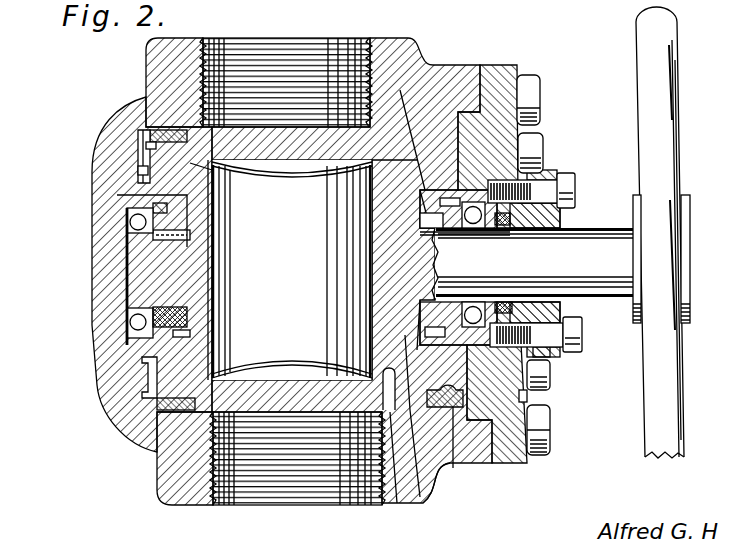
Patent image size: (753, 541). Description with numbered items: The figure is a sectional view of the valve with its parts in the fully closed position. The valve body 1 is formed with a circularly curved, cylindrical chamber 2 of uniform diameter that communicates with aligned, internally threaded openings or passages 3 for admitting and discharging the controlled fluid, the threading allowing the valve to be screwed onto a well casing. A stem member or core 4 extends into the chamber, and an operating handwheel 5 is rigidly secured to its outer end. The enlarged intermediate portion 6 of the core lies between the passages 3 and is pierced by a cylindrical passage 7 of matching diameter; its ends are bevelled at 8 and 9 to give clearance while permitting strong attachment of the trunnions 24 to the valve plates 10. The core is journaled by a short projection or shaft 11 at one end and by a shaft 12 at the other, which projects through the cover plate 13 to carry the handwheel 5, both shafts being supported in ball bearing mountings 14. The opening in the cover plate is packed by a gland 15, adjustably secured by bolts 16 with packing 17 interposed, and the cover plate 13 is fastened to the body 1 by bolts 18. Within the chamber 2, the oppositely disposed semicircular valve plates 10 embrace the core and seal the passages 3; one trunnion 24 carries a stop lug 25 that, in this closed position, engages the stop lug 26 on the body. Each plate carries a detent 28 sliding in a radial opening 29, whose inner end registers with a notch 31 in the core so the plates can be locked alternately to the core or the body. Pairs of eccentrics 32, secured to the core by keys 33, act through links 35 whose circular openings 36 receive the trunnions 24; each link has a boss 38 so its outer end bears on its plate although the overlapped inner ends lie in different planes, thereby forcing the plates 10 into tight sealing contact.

The valve body 1 is at (145, 433).
The chamber 2 is at (157, 452).
The openings or passages 3 is at (290, 48).
The stem member or core 4 is at (150, 250).
The operating handwheel 5 is at (672, 157).
The intermediate portion 6 is at (368, 204).
The passage 7 is at (200, 273).
The coned or bevelled end 8 is at (368, 184).
The coned or bevelled end 9 is at (222, 186).
The valve plates 10 is at (400, 110).
The short projection or shaft 11 is at (137, 273).
The stem or shaft 12 is at (585, 237).
The cover plate 13 is at (508, 66).
The ball bearing mountings 14 is at (150, 223).
The gland 15 is at (555, 360).
The bolts 16 is at (567, 193).
The packing 17 is at (500, 232).
The bolts 18 is at (533, 95).
The trunnions 24 is at (150, 153).
The stop lug 25 is at (148, 171).
The stop lug 26 is at (150, 144).
The detent 28 is at (394, 503).
The openings 29 is at (422, 501).
The notches 31 is at (380, 366).
The eccentrics 32 is at (204, 298).
The keys 33 is at (204, 233).
The links 35 is at (135, 216).
The circular opening 36 is at (165, 131).
The boss 38 is at (135, 208).